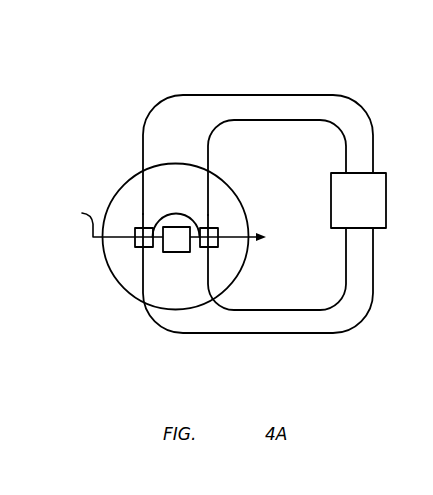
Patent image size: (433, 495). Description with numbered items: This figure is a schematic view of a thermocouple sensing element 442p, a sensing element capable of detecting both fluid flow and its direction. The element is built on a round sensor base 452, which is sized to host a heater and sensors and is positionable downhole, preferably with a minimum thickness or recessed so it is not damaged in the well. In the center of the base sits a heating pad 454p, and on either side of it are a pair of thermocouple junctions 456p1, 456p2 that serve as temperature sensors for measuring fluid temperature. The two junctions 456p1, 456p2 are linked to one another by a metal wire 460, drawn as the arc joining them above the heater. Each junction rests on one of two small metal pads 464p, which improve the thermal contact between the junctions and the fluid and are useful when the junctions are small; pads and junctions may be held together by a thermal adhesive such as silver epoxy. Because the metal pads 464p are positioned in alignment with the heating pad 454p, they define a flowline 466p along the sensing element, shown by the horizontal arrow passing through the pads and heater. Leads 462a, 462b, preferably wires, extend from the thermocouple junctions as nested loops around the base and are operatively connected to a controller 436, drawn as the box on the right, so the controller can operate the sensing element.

The thermocouple sensing element 442p is at (117, 40).
The lead 462a is at (203, 96).
The lead 462b is at (258, 332).
The controller 436 is at (344, 213).
The sensor base 452 is at (230, 212).
The flowline 466p is at (149, 223).
The metal wire 460 is at (138, 228).
The metal pads 464p is at (134, 228).
The heating pad 454p is at (172, 227).
The TC junction 456p1 is at (135, 247).
The TC junction 456p2 is at (200, 248).